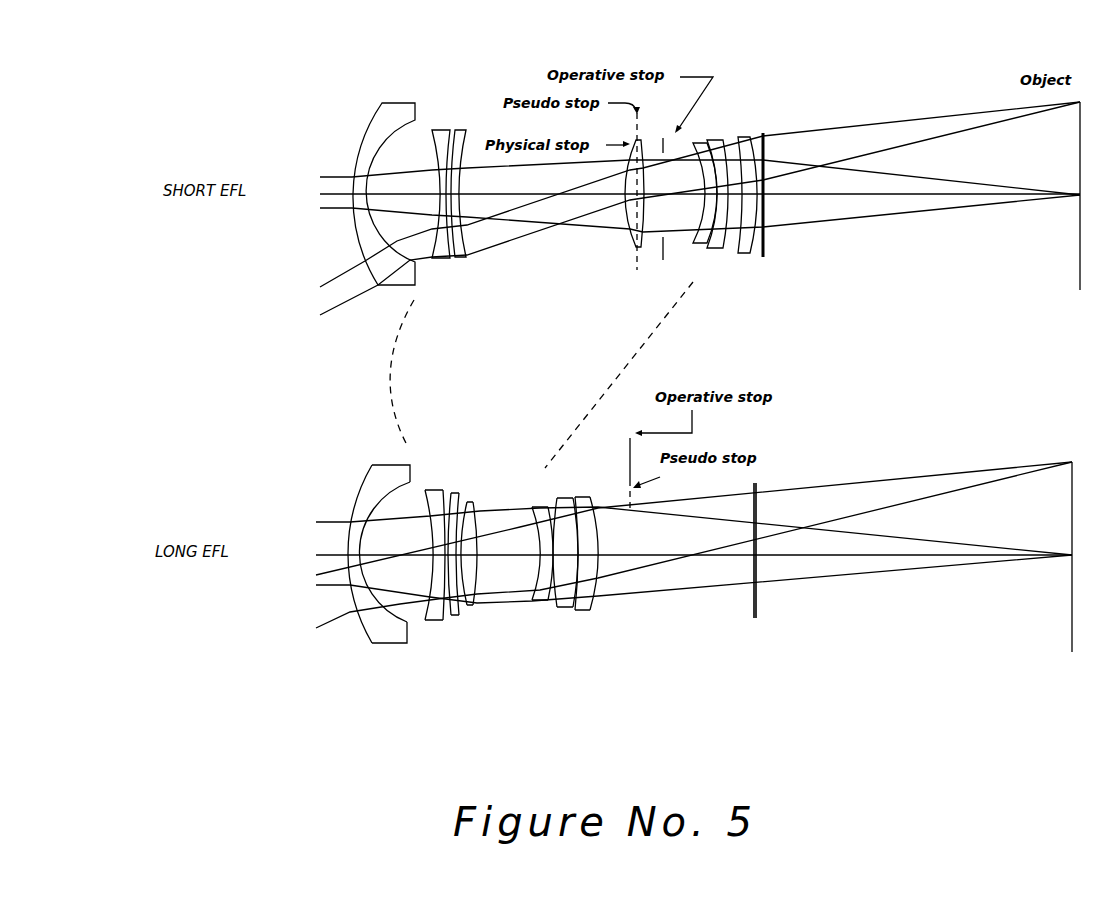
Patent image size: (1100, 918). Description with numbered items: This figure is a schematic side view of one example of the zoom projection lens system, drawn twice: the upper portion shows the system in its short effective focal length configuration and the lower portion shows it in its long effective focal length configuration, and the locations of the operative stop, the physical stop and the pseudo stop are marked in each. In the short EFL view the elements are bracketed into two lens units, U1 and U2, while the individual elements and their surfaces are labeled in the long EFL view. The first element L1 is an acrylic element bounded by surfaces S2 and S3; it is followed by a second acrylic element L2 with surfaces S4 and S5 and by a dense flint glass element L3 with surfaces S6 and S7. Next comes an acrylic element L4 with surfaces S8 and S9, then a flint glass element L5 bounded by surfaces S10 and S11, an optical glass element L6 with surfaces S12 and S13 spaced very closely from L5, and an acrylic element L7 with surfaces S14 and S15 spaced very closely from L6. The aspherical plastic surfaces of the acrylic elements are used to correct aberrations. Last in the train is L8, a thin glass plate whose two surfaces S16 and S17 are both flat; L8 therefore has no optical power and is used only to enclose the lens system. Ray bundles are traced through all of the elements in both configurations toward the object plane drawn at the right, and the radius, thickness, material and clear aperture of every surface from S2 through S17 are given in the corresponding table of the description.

The first lens unit U1 is at (755, 103).
The second lens unit U2 is at (480, 98).
The first lens element L1 is at (357, 580).
The second lens element L2 is at (435, 592).
The third lens element L3 is at (470, 568).
The fourth lens element L4 is at (505, 574).
The fifth lens element L5 is at (578, 600).
The sixth lens element L6 is at (630, 572).
The seventh lens element L7 is at (662, 553).
The eighth lens element L8 is at (799, 572).
The first surface of first lens element S2 is at (360, 633).
The second surface of first lens element S3 is at (397, 627).
The first surface of second lens element S4 is at (431, 607).
The second surface of second lens element S5 is at (441, 614).
The first surface of third lens element S6 is at (451, 610).
The second surface of third lens element S7 is at (456, 609).
The first surface of fourth lens element S8 is at (468, 607).
The second surface of fourth lens element S9 is at (478, 604).
The first surface of fifth lens element S10 is at (550, 603).
The second surface of fifth lens element S11 is at (568, 607).
The first surface of sixth lens element S12 is at (630, 603).
The second surface of sixth lens element S13 is at (580, 612).
The first surface of seventh lens element S14 is at (600, 583).
The second surface of seventh lens element S15 is at (612, 585).
The first surface of eighth lens element S16 is at (757, 608).
The second surface of eighth lens element S17 is at (757, 592).